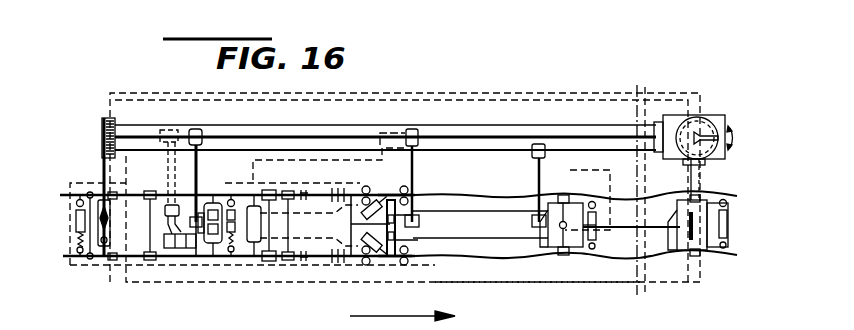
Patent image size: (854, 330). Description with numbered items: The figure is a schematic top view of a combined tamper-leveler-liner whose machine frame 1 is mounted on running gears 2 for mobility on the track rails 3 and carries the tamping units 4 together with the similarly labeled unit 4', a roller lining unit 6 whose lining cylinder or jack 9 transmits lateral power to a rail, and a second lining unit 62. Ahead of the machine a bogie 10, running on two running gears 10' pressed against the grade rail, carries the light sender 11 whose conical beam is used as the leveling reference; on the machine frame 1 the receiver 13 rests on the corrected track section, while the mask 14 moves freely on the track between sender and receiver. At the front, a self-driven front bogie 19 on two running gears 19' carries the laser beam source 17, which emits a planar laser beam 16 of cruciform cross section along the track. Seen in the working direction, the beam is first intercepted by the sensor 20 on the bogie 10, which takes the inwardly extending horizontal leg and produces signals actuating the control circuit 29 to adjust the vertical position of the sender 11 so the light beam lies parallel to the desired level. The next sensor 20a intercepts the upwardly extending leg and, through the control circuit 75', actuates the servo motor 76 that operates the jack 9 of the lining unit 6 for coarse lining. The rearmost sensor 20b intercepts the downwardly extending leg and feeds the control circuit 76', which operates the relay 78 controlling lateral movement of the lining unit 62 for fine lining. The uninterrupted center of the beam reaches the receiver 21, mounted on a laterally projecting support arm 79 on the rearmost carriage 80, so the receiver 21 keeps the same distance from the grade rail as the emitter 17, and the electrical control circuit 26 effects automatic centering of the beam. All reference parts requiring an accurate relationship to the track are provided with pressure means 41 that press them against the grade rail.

The machine frame 1 is at (84, 270).
The running gears 2 is at (151, 262).
The track rails 3 is at (452, 197).
The tamping units 4 is at (318, 249).
The clamp 4' is at (416, 269).
The roller lining unit 6 is at (401, 258).
The lining cylinders 9 is at (380, 196).
The bogie 10 is at (568, 238).
The running gears 10' is at (539, 245).
The sender 11 is at (560, 276).
The receiver 13 is at (272, 262).
The light beam interceptor or mask 14 is at (342, 262).
The planar laser beam 16 is at (466, 134).
The laser beam source 17 is at (715, 118).
The front bogie 19 is at (705, 220).
The running gears 19' is at (667, 259).
The sensor 20 is at (545, 158).
The sensor 20a is at (416, 130).
The sensor 20b is at (199, 130).
The receiver 21 is at (117, 118).
The electrical control circuit 26 is at (500, 93).
The control circuit 29 is at (610, 188).
The biasing or pressure means 41 is at (80, 199).
The lining unit 62 is at (213, 262).
The control circuit 75' is at (309, 135).
The servo motor 76 is at (252, 251).
The control circuit 76' is at (173, 155).
The relay 78 is at (181, 262).
The support arm 79 is at (102, 168).
The rearmost carriage 80 is at (112, 262).